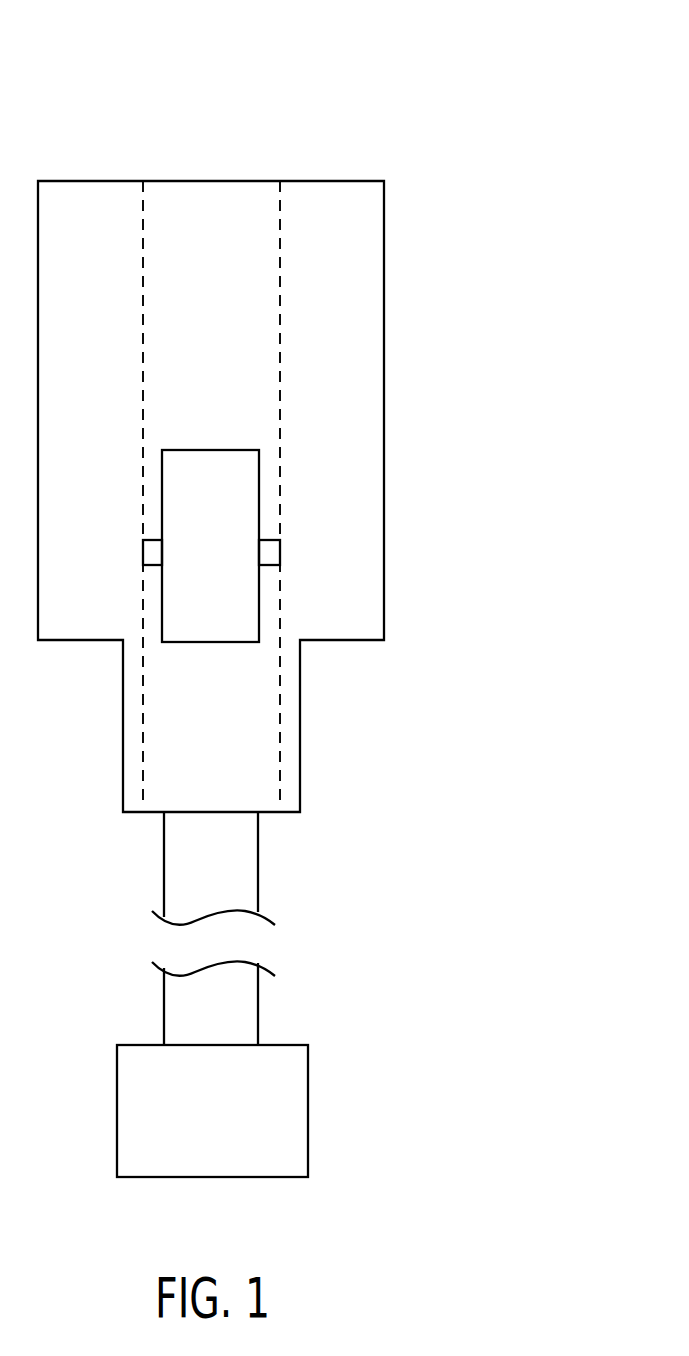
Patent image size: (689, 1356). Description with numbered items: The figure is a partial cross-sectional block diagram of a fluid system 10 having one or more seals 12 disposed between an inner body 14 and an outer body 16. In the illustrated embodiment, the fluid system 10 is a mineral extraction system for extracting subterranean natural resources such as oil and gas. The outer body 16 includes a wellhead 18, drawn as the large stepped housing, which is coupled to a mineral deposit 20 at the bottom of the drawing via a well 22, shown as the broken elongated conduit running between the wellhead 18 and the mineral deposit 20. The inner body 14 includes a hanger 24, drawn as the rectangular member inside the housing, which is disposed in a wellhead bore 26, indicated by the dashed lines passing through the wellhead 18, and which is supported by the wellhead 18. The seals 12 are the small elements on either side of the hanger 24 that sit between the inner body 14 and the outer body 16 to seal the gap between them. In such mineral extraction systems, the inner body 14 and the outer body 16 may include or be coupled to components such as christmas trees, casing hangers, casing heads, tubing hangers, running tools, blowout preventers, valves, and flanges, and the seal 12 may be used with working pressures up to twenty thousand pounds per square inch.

The fluid system 10 is at (483, 72).
The seal 12 is at (270, 551).
The inner body 14 is at (151, 545).
The hanger 24 is at (161, 472).
The outer body 16 is at (273, 459).
The wellhead 18 is at (273, 459).
The mineral deposit 20 is at (308, 1069).
The well 22 is at (258, 861).
The wellhead bore 26 is at (282, 208).